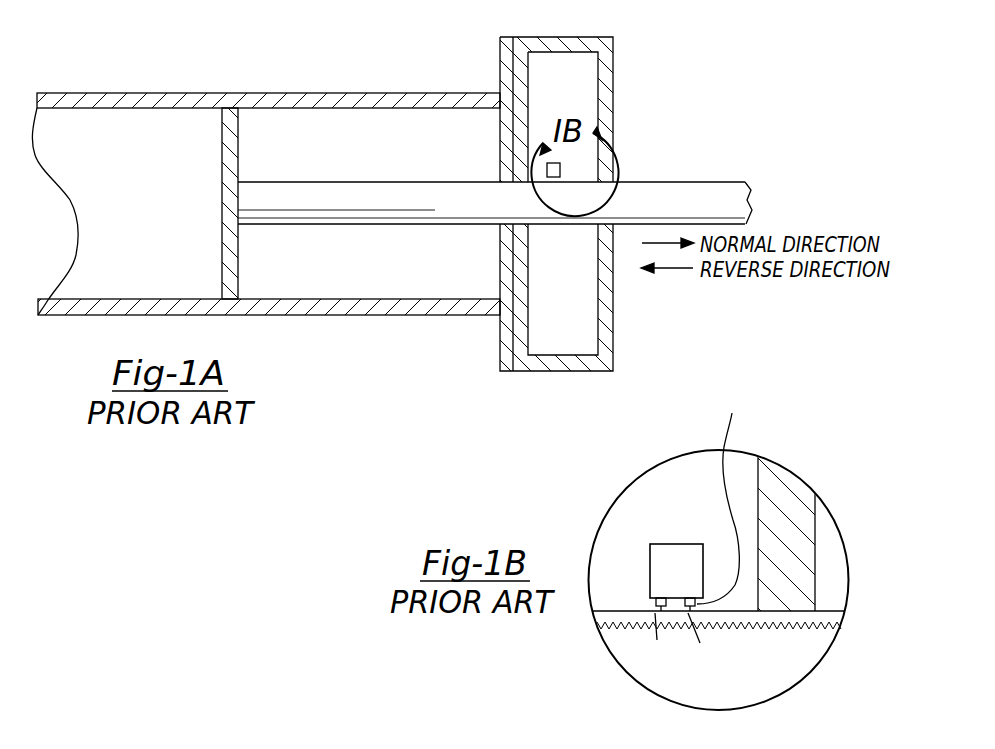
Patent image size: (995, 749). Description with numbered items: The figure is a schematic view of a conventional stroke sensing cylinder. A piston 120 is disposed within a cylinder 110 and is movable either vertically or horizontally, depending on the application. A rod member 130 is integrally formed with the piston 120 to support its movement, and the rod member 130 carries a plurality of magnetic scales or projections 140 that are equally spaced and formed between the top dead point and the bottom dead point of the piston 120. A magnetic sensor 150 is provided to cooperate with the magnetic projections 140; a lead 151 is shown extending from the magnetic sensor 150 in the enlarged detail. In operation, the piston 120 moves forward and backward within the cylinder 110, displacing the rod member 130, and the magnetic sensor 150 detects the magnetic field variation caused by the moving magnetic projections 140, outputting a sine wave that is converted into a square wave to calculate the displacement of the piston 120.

In FIG. 1A, the cylinder 110 is at (111, 93).
In FIG. 1A, the piston 120 is at (222, 263).
In FIG. 1A, the rod member 130 is at (390, 212).
In FIG. 1B, the rod member 130 is at (790, 657).
In FIG. 1B, the magnetic projections 140 is at (828, 611).
In FIG. 1A, the magnetic sensor 150 is at (547, 170).
In FIG. 1B, the magnetic sensor 150 is at (650, 572).
In FIG. 1B, the lead wire 151 is at (724, 498).